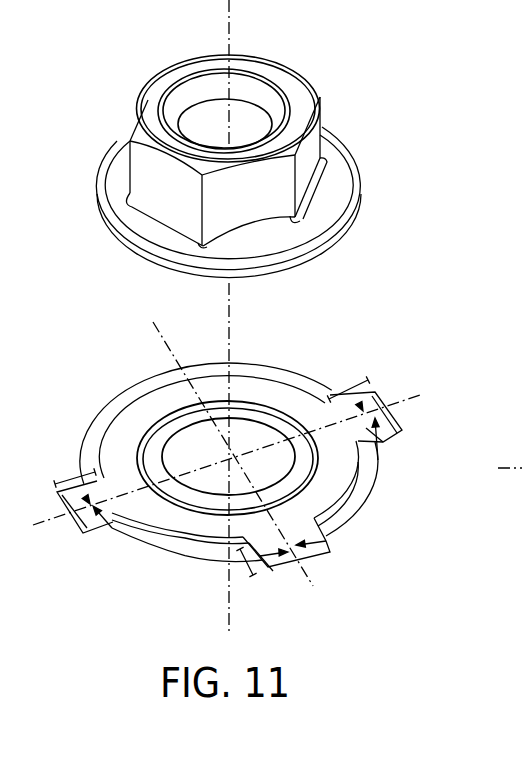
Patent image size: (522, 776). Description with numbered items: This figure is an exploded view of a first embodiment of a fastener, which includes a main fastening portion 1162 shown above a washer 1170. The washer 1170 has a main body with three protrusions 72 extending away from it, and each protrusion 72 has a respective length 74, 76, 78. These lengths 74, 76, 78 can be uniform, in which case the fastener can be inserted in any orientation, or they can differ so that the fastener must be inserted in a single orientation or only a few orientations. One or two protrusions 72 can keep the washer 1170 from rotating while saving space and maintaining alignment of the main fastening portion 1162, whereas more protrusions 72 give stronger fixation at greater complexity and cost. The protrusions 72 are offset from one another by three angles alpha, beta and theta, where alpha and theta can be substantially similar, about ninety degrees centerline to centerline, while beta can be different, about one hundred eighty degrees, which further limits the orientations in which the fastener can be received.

The main fastening portion 1162 is at (157, 82).
The washer 1170 is at (385, 330).
The protrusions 72 is at (70, 512).
The length 74 is at (88, 501).
The length 76 is at (361, 408).
The length 78 is at (245, 572).